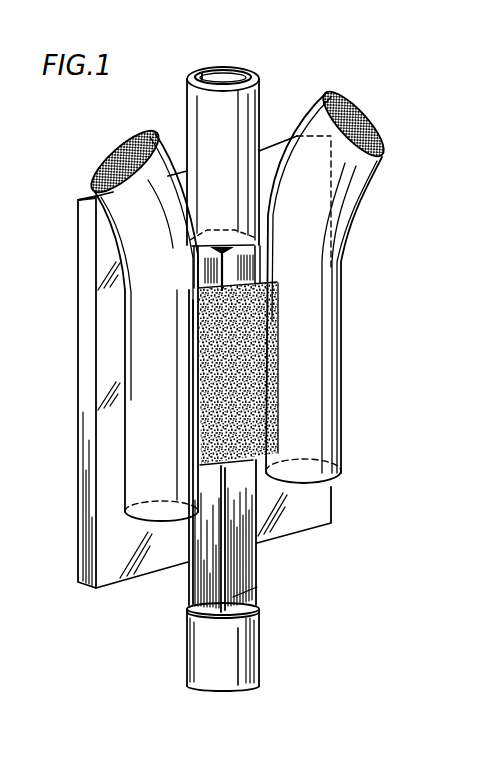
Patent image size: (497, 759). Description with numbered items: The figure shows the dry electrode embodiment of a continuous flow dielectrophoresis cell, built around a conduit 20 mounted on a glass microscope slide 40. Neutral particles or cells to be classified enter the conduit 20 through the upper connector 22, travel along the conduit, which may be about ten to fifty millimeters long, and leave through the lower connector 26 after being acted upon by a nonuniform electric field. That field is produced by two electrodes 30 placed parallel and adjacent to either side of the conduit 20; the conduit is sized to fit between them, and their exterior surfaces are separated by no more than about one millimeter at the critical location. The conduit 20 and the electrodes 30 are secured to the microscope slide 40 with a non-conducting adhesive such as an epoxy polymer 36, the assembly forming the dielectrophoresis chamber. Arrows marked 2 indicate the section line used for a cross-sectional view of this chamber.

The conduit 20 is at (240, 560).
The connector 22 is at (258, 93).
The connector 26 is at (245, 660).
The electrodes 30 is at (338, 285).
The epoxy polymer 36 is at (248, 410).
The microscope slide 40 is at (100, 304).
The section line 2- 2 is at (345, 347).